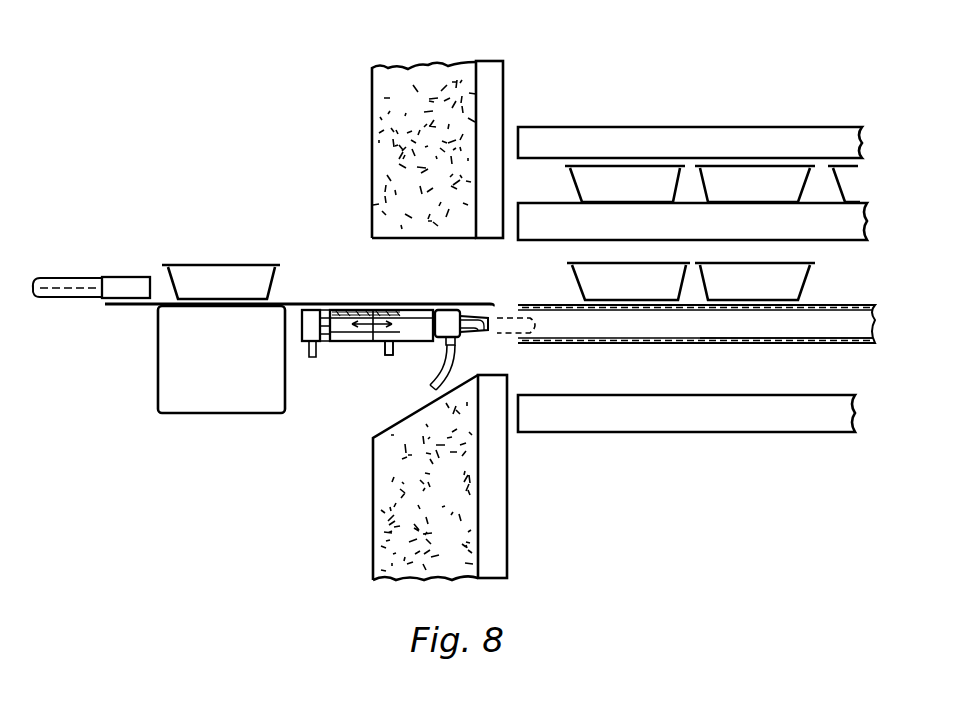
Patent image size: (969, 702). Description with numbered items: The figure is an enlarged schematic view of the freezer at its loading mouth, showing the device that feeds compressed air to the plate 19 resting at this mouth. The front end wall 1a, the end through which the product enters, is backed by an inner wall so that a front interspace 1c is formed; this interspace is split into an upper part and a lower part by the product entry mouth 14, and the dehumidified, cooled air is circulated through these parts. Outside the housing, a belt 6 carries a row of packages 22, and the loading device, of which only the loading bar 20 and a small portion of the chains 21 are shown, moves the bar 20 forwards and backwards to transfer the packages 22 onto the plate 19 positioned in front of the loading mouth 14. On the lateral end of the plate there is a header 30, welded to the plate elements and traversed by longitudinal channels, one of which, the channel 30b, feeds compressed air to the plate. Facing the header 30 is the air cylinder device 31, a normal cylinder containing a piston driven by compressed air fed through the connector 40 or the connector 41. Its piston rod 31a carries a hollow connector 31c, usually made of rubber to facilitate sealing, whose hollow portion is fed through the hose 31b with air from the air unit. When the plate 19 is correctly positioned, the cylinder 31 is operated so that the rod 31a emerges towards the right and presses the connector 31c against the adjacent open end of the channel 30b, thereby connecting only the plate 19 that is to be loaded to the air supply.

The front end wall 1a is at (398, 75).
The front interspace 1c is at (489, 70).
The belt 6 is at (170, 353).
The product entry mouth 14 is at (378, 276).
The plate 19 is at (757, 225).
The loading bar 20 is at (122, 276).
The chains 21 is at (60, 295).
The packages 22 is at (643, 178).
The header 30 is at (582, 344).
The longitudinal channel 30b is at (758, 322).
The air cylinder device 31 is at (348, 346).
The piston rod 31a is at (341, 305).
The hose 31b is at (436, 362).
The hollow connector 31c is at (462, 313).
The connector 40 is at (310, 355).
The connector 41 is at (383, 356).